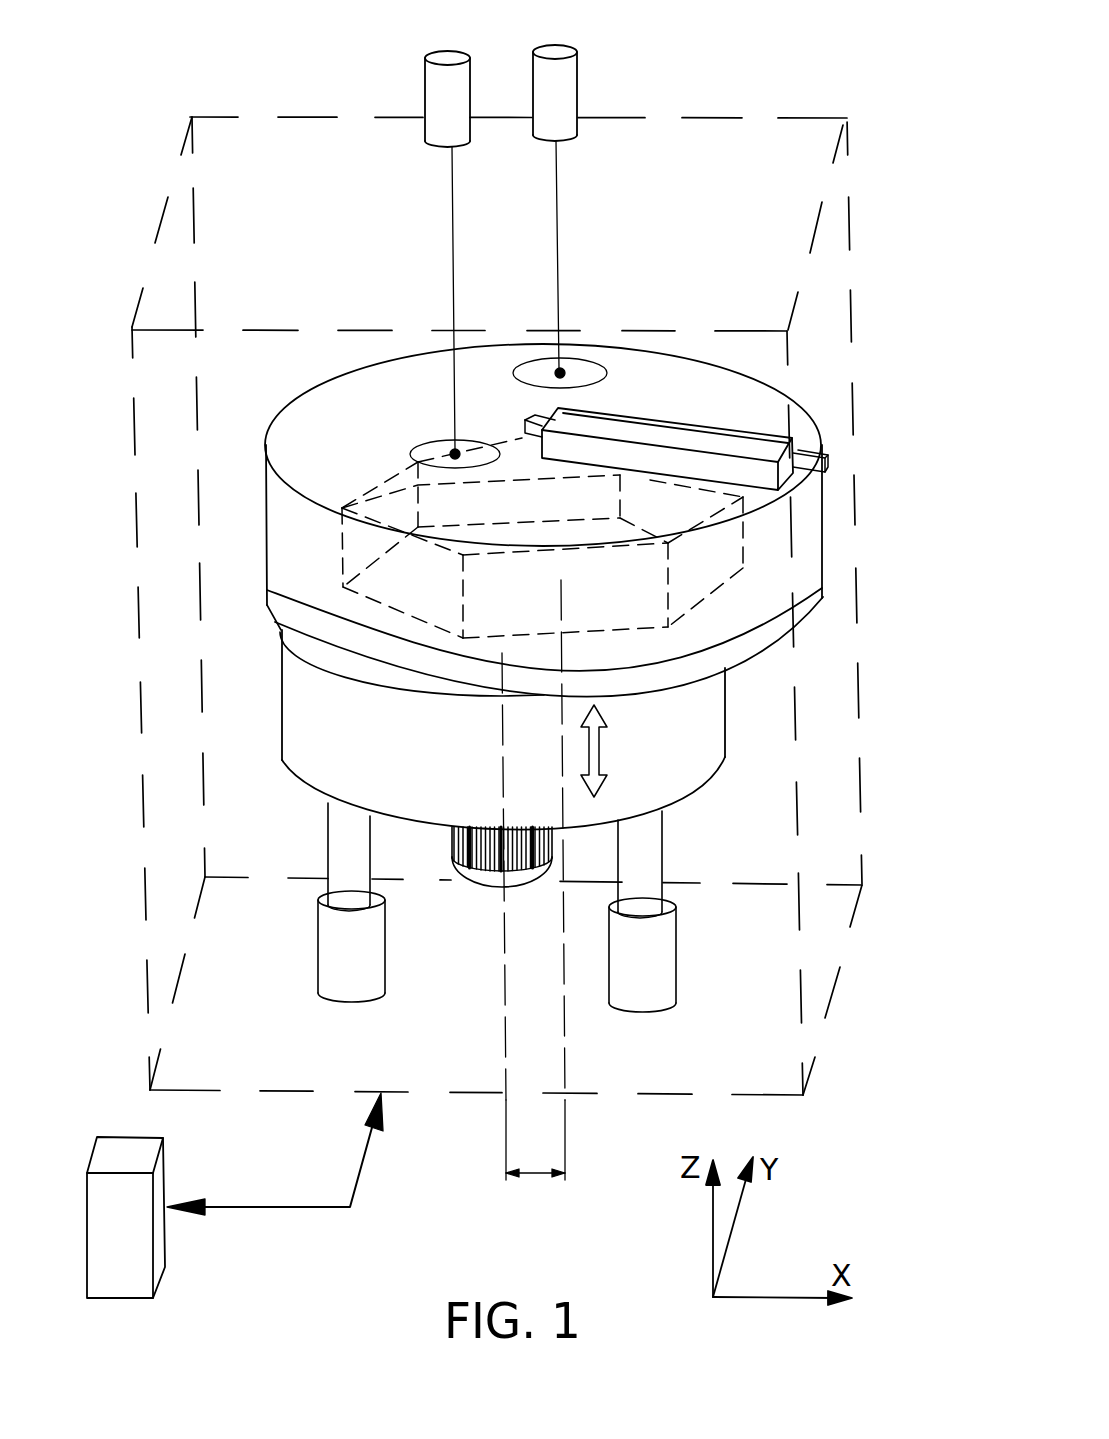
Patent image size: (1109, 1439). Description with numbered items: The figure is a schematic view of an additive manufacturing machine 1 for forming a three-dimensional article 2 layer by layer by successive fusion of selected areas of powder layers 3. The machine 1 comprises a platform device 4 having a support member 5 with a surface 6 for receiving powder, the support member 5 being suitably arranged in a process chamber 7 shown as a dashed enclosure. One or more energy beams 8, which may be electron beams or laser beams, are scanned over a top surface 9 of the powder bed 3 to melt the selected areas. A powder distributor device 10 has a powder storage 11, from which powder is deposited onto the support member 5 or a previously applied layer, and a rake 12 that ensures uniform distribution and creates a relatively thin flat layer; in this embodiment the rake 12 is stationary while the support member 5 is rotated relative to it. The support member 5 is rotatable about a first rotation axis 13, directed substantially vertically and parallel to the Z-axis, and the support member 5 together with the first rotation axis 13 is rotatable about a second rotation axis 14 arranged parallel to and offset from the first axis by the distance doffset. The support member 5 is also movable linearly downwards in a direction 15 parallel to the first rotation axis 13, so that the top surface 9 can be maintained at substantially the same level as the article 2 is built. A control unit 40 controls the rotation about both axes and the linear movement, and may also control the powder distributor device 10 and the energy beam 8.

The additive manufacturing machine 1 is at (818, 63).
The three-dimensional article 2 is at (688, 572).
The powder layers 3 is at (740, 407).
The platform device 4 is at (252, 679).
The support member 5 is at (267, 598).
The powder receiving surface 6 is at (822, 553).
The process chamber 7 is at (277, 167).
The energy beams 8 is at (452, 180).
The top surface 9 is at (598, 348).
The powder distributor device 10 is at (725, 432).
The powder storage 11 is at (757, 440).
The rake 12 is at (828, 462).
The first rotation axis 13 is at (557, 845).
The second rotation axis 14 is at (502, 925).
The direction 15 is at (607, 750).
The control unit 40 is at (122, 1262).